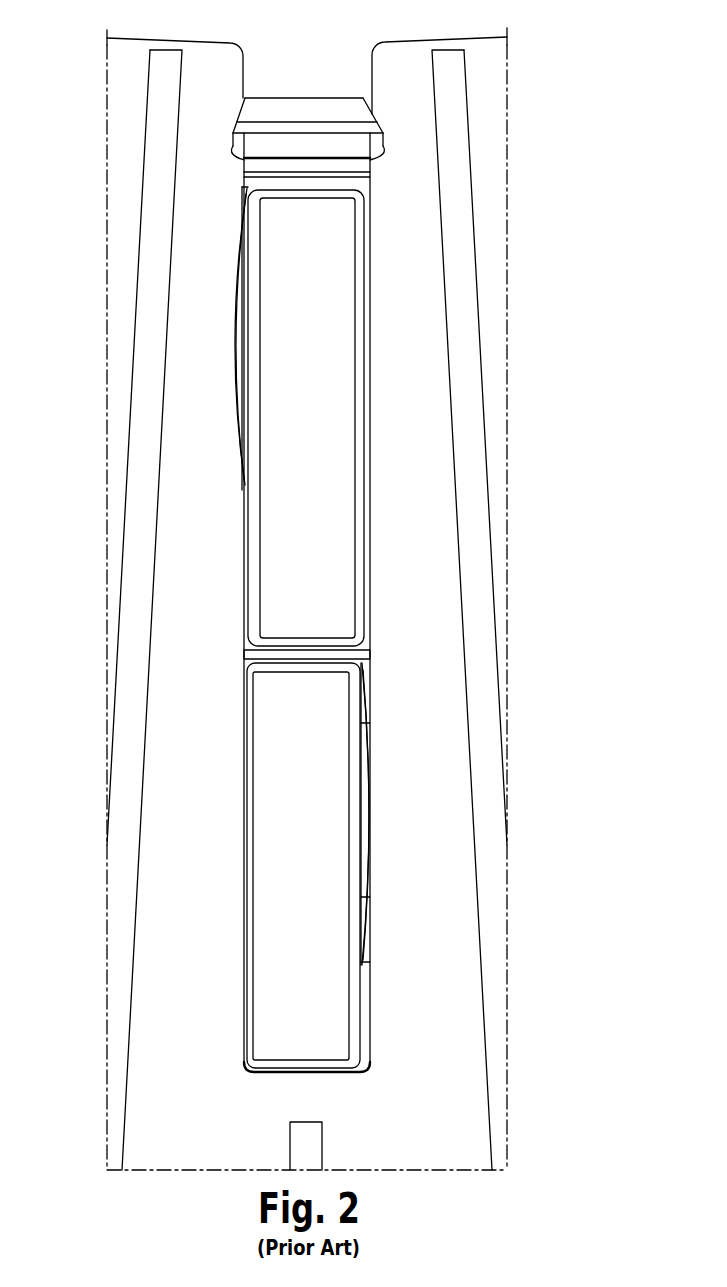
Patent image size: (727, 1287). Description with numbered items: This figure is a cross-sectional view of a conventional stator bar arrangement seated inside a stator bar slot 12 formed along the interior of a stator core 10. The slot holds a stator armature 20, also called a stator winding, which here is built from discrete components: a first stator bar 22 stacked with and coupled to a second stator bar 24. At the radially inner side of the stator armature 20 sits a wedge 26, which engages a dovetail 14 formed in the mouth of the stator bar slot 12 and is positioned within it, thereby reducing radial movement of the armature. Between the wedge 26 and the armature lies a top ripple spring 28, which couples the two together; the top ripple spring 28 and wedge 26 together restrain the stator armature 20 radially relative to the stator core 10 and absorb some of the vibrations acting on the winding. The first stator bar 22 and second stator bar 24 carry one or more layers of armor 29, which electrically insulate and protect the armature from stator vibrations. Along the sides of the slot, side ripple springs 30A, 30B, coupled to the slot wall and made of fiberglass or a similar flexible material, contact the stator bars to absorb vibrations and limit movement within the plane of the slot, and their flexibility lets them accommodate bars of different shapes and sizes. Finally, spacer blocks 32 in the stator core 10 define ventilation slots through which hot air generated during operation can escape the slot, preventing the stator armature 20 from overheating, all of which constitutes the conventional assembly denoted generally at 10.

The stator core 10 is at (516, 45).
The stator bar slot 12 is at (300, 75).
The dovetail 14 is at (385, 143).
The stator armature 20 is at (396, 649).
The first stator bar 22 is at (322, 412).
The second stator bar 24 is at (305, 973).
The wedge 26 is at (275, 108).
The top ripple spring 28 is at (362, 173).
The armor 29 is at (355, 1043).
The side ripple spring 30A is at (237, 332).
The side ripple spring 30B is at (367, 817).
The spacer block 32 is at (155, 278).